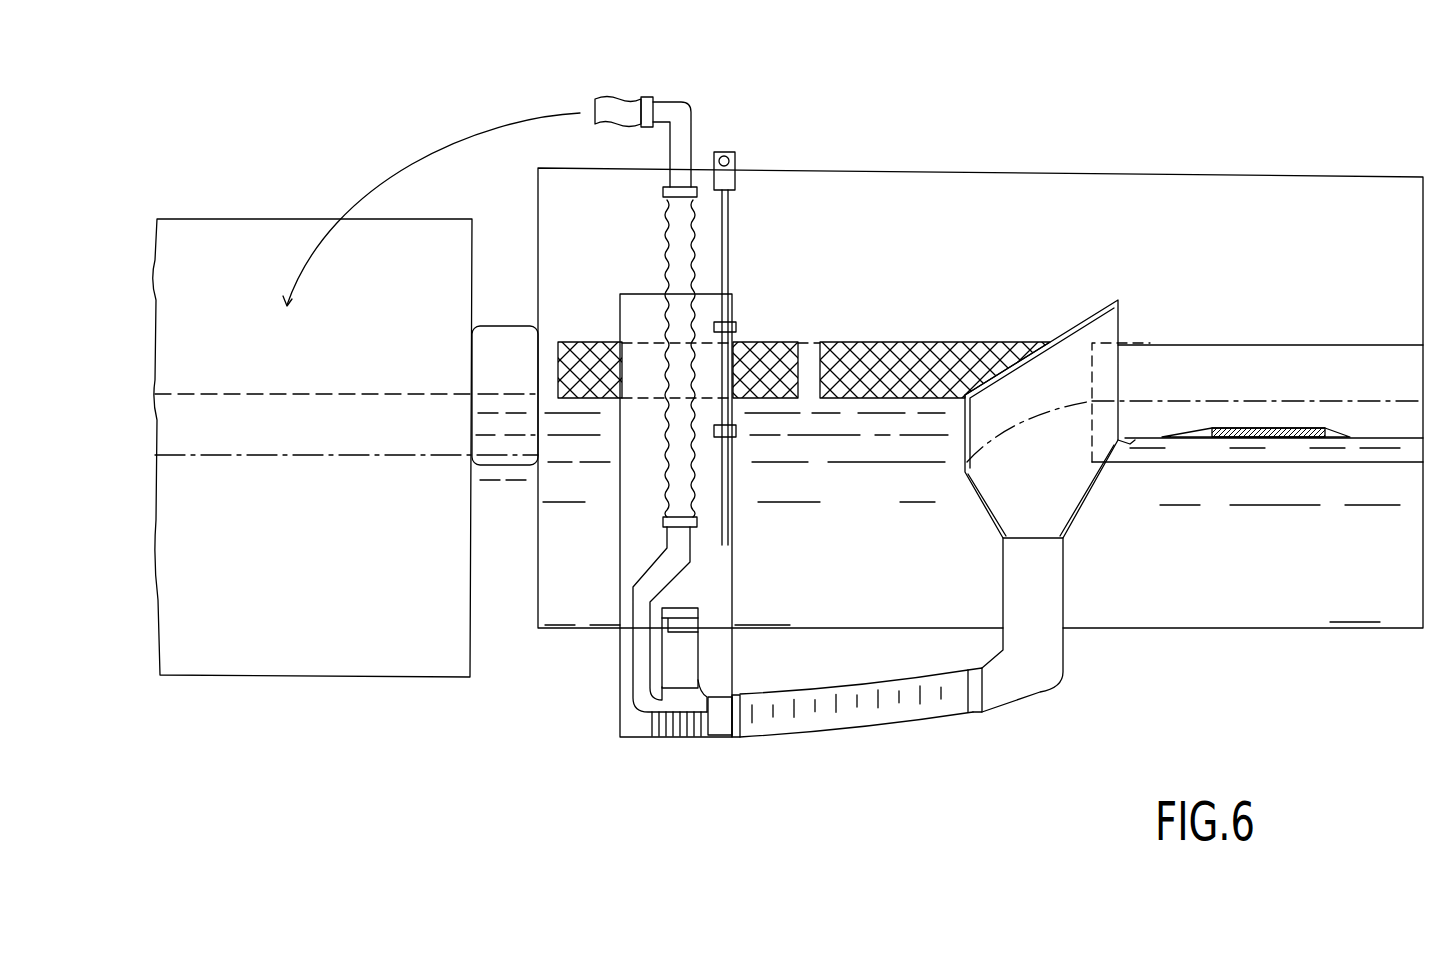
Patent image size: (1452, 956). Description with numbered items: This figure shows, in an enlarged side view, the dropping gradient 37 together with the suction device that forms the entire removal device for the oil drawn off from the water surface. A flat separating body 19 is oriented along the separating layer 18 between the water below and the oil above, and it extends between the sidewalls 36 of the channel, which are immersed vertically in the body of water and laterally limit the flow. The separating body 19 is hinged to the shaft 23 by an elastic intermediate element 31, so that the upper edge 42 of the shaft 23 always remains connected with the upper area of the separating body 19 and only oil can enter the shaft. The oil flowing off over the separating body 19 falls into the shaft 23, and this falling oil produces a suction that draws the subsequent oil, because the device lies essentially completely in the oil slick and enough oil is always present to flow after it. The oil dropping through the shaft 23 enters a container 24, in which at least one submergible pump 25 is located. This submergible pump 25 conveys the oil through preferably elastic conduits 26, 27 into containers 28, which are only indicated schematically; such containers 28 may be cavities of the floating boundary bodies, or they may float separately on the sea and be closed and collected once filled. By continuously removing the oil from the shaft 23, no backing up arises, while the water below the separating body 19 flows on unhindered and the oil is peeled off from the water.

The separating layer 18 is at (1378, 437).
The separating body 19 is at (1272, 428).
The shaft 23 is at (1036, 582).
The container 24 is at (620, 708).
The submergible pump 25 is at (690, 677).
The elastic conduit 26 is at (668, 457).
The elastic conduit 27 is at (618, 96).
The container 28 is at (237, 300).
The elastic intermediate element 31 is at (1175, 433).
The sidewall 36 is at (1047, 218).
The dropping gradient 37 is at (1057, 443).
The upper edge 42 is at (1122, 440).